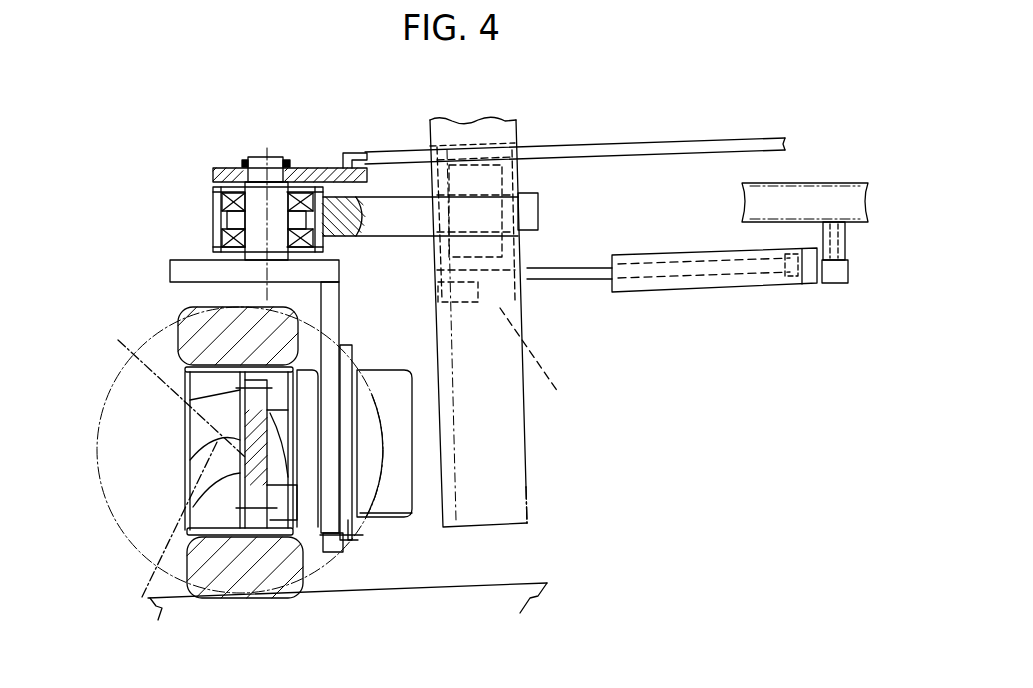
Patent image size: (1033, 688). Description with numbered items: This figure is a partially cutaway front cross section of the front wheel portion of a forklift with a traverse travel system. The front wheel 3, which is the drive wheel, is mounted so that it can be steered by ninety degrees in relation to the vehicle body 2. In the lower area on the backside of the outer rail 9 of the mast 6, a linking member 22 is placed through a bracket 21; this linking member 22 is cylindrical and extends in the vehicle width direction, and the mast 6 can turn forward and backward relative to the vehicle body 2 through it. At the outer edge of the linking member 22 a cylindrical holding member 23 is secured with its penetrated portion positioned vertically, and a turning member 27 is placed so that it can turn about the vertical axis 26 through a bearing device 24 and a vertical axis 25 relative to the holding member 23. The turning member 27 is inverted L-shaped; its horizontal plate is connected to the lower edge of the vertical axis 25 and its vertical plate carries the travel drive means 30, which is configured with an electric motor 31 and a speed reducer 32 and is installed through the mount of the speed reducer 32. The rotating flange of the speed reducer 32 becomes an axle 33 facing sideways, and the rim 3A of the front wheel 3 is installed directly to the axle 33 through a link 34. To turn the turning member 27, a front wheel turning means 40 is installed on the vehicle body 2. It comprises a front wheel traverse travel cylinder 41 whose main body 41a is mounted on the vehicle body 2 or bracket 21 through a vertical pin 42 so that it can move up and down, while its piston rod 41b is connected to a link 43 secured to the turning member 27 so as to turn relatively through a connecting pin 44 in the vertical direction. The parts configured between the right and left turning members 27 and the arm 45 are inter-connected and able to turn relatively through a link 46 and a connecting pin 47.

The vehicle body 2 is at (817, 185).
The front wheel 3 is at (253, 578).
The rim 3A is at (190, 587).
The mast 6 is at (527, 432).
The outer rail 9 is at (508, 490).
The bracket 21 is at (557, 147).
The linking member 22 is at (538, 208).
The holding member 23 is at (213, 224).
The bearing device 24 is at (213, 205).
The vertical axis 25 is at (250, 156).
The vertical axis 26 is at (273, 156).
The turning member 27 is at (167, 273).
The travel drive means 30 is at (388, 530).
The electric motor 31 is at (403, 505).
The speed reducer 32 is at (338, 557).
The axle 33 is at (150, 599).
The link 34 is at (165, 456).
The front wheel turning means 40 is at (672, 320).
The front wheel traverse travel cylinder 41 is at (714, 320).
The main body 41a is at (760, 286).
The piston rod 41b is at (566, 280).
The vertical pin 42 is at (851, 286).
The link 43 is at (312, 355).
The connecting pin 44 is at (547, 360).
The arm 45 is at (210, 176).
The link 46 is at (667, 143).
The connecting pin 47 is at (365, 152).